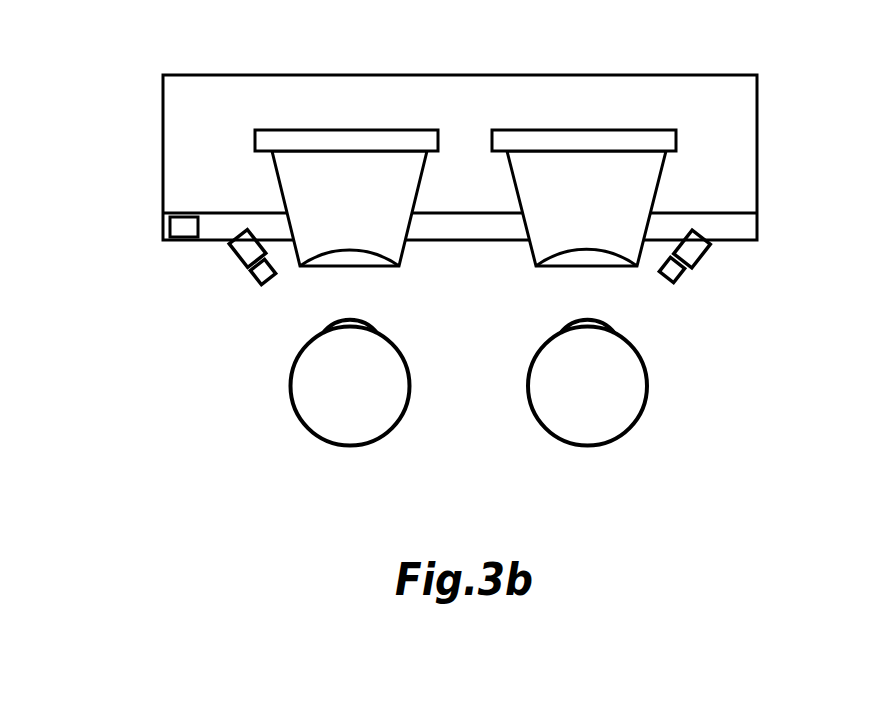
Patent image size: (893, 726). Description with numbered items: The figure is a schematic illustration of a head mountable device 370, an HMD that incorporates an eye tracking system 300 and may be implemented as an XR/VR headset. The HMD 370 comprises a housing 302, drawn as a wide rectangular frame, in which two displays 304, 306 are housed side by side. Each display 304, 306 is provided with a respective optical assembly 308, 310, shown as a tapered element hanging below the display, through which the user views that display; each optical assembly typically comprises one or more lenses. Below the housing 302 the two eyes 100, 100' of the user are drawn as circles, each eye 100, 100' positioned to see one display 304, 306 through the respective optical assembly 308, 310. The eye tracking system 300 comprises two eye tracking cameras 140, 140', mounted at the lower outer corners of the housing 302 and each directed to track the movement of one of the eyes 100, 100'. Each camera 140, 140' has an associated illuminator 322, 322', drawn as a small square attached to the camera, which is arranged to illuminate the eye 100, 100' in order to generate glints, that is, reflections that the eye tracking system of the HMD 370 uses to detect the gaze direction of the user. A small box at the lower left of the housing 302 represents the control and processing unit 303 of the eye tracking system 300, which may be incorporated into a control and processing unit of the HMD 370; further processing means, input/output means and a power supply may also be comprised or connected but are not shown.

The head mountable device 370 is at (118, 45).
The eye tracking system 300 is at (164, 242).
The housing 302 is at (732, 102).
The control and processing unit 303 is at (177, 228).
The display 304 is at (322, 137).
The display 306 is at (558, 137).
The optical assembly 308 is at (378, 165).
The optical assembly 310 is at (614, 165).
The eye tracking camera 140 is at (195, 266).
The eye tracking camera 140' is at (738, 279).
The illuminator 322 is at (239, 306).
The illuminator 322' is at (675, 312).
The eye 100 is at (299, 383).
The eye 100' is at (547, 383).